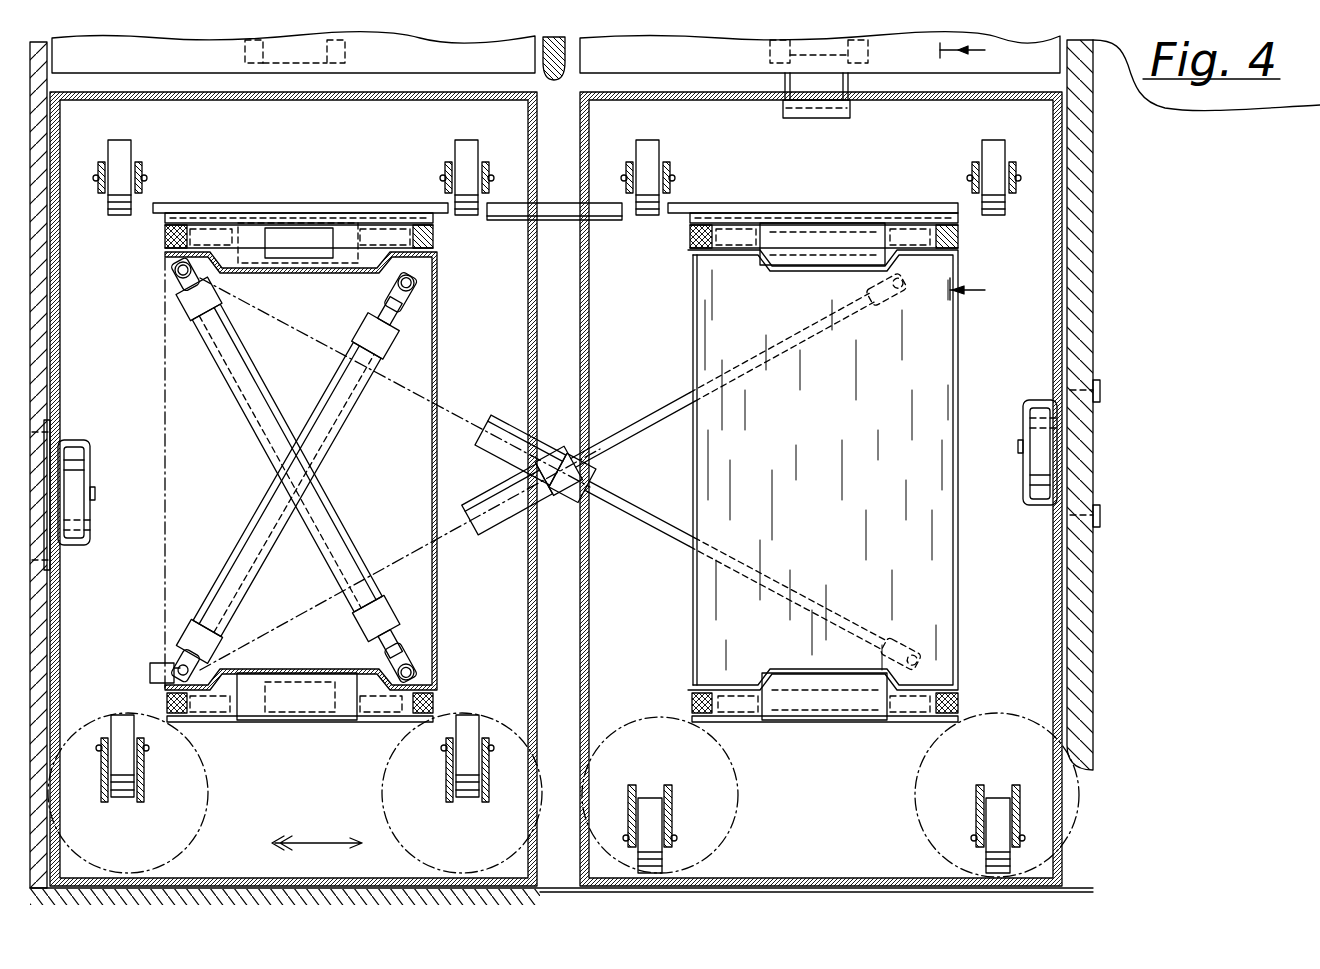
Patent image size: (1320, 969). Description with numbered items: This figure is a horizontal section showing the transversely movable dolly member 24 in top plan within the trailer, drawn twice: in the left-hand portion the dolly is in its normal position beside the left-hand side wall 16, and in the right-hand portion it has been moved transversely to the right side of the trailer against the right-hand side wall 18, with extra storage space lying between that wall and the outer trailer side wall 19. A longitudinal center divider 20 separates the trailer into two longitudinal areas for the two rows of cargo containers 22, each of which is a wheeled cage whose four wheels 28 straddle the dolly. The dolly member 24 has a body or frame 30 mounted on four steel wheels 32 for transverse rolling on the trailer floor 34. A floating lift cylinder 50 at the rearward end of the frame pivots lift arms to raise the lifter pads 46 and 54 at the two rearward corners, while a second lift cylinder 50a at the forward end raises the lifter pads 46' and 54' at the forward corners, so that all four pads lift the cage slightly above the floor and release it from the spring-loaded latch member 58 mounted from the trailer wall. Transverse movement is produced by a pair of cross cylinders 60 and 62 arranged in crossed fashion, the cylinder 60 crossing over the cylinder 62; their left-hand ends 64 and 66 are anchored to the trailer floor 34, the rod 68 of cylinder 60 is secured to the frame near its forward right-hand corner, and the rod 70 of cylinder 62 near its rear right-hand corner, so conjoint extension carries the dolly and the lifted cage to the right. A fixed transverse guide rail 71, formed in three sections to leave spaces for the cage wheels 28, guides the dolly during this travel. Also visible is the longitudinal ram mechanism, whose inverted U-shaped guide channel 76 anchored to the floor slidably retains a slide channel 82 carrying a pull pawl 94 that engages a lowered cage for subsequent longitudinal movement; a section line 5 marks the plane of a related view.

The section line 5 is at (975, 170).
The left-hand side wall 16 is at (58, 372).
The right-hand side wall 18 is at (1088, 345).
The outer trailer side wall 19 is at (1302, 545).
The longitudinal center divider 20 is at (565, 54).
The cargo container 22 is at (372, 94).
The dolly member 24 is at (840, 502).
The wheels 28 is at (124, 150).
The dolly frame 30 is at (438, 360).
The steel wheels 32 is at (214, 236).
The trailer floor 34 is at (328, 796).
The lifter pad 46 is at (560, 733).
The lifter pad 46' is at (561, 209).
The lift cylinder 50 is at (296, 720).
The second lift cylinder 50a is at (298, 264).
The lifter pad 54 is at (714, 688).
The lifter pad 54' is at (704, 200).
The spring-loaded latch member 58 is at (76, 502).
The cross cylinder 60 is at (248, 520).
The cross cylinder 62 is at (246, 402).
The left-hand end of cylinder 60 64 is at (172, 662).
The left-hand end of cylinder 62 66 is at (176, 270).
The rod of cylinder 60 68 is at (414, 294).
The rod of cylinder 62 70 is at (416, 656).
The fixed transverse guide rail 71 is at (294, 204).
The longitudinal guide channel 76 is at (245, 58).
The slide channel 82 is at (838, 84).
The pull pawl 94 is at (785, 110).